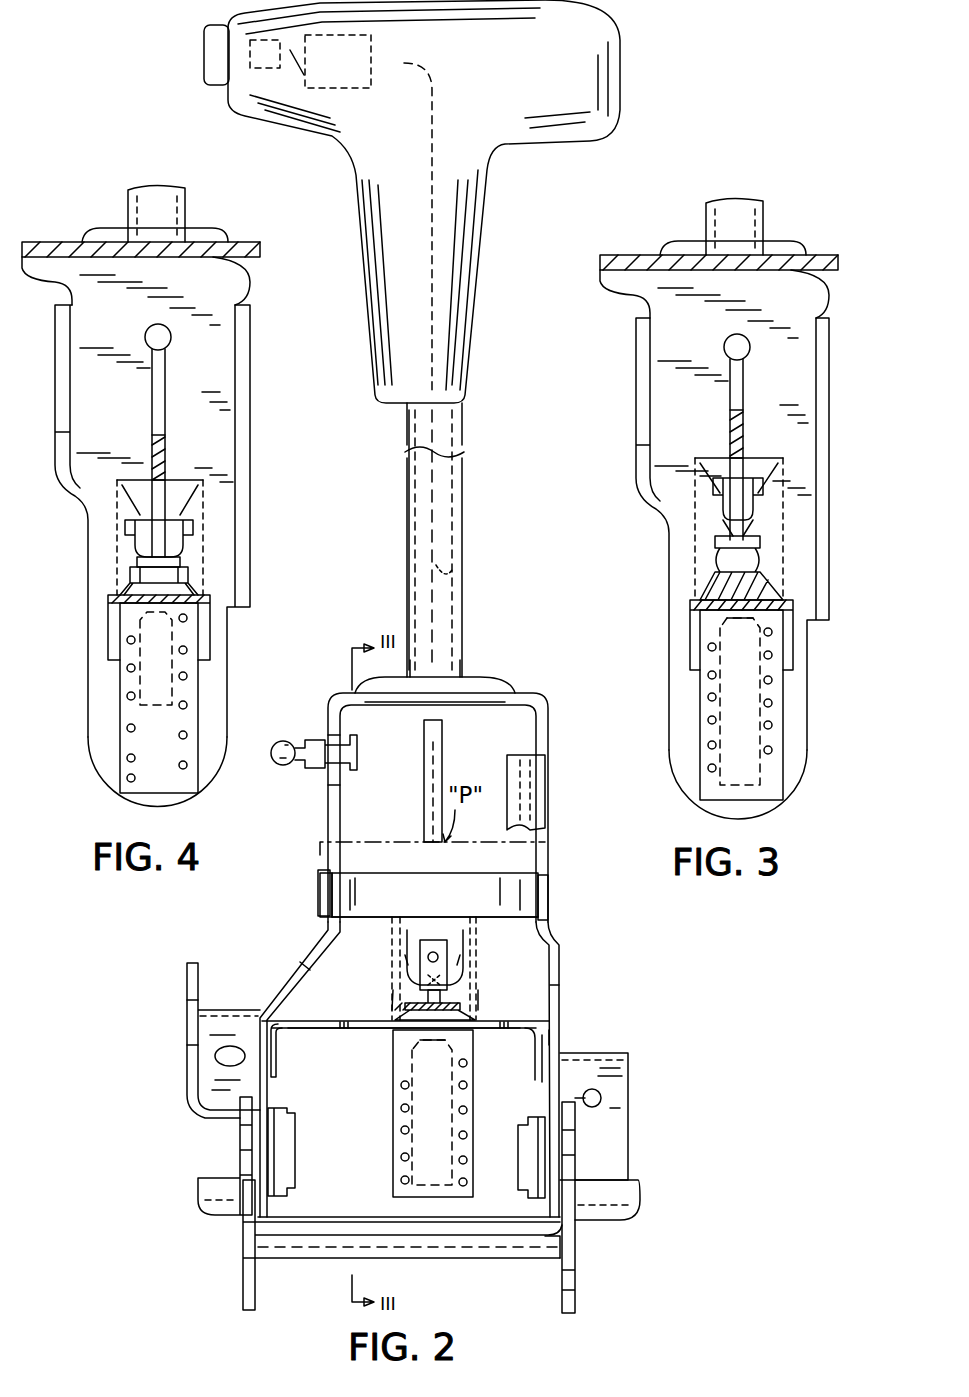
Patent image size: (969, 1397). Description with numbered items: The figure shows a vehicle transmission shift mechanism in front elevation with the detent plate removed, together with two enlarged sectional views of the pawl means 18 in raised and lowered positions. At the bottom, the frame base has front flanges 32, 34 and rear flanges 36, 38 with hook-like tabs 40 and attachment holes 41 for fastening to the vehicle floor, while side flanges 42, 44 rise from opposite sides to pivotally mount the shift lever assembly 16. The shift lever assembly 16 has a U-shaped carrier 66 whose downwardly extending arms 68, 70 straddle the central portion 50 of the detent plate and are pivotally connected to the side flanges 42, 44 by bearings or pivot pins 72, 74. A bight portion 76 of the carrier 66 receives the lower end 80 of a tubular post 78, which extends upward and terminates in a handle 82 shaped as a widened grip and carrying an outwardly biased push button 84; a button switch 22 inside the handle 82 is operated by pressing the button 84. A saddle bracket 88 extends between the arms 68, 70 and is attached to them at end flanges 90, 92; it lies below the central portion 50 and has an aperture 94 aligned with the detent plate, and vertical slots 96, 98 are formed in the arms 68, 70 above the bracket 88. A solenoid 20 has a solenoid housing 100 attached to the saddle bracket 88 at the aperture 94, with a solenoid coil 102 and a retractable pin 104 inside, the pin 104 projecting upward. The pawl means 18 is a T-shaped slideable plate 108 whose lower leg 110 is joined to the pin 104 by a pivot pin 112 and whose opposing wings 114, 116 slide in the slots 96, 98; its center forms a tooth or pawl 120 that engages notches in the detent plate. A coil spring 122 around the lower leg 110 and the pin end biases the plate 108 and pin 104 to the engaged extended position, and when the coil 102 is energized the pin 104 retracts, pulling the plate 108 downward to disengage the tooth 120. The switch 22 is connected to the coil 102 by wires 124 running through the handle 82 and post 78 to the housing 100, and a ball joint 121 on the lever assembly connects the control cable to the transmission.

In FIG. 2, the shift lever assembly 16 is at (465, 470).
In FIG. 2, the latch assembly 18 is at (570, 888).
In FIG. 2, the solenoid 20 is at (525, 1062).
In FIG. 2, the button switch 22 is at (322, 118).
In FIG. 2, the front flange 32 is at (188, 1005).
In FIG. 2, the front flange 34 is at (630, 1060).
In FIG. 2, the rear flange 36 is at (256, 1300).
In FIG. 2, the rear flange 38 is at (576, 1296).
In FIG. 2, the hook-like tab 40 is at (562, 1296).
In FIG. 2, the attachment hole 41 is at (216, 1060).
In FIG. 2, the side flange 42 is at (240, 1122).
In FIG. 2, the side flange 44 is at (580, 1135).
In FIG. 2, the central portion 50 is at (450, 740).
In FIG. 2, the U-shaped carrier 66 is at (555, 702).
In FIG. 2, the arm 68 is at (308, 968).
In FIG. 2, the arm 70 is at (556, 945).
In FIG. 4, the arm 70 is at (228, 323).
In FIG. 3, the arm 70 is at (810, 312).
In FIG. 2, the bearing/pivot pin 72 is at (290, 1142).
In FIG. 2, the bearing/pivot pin 74 is at (518, 1144).
In FIG. 2, the bight portion 76 is at (398, 705).
In FIG. 4, the bight portion 76 is at (238, 292).
In FIG. 3, the bight portion 76 is at (818, 282).
In FIG. 2, the tubular post 78 is at (464, 514).
In FIG. 2, the lower end 80 is at (462, 675).
In FIG. 4, the lower end 80 is at (186, 216).
In FIG. 3, the lower end 80 is at (764, 228).
In FIG. 2, the handle 82 is at (476, 119).
In FIG. 2, the push button 84 is at (222, 86).
In FIG. 2, the saddle bracket 88 is at (530, 1030).
In FIG. 4, the saddle bracket 88 is at (112, 618).
In FIG. 3, the saddle bracket 88 is at (765, 618).
In FIG. 2, the end flange 90 is at (278, 1060).
In FIG. 2, the end flange 92 is at (535, 1068).
In FIG. 2, the aperture 94 is at (405, 1035).
In FIG. 2, the slot 96 is at (320, 892).
In FIG. 4, the slot 96 is at (160, 410).
In FIG. 3, the slot 96 is at (740, 398).
In FIG. 2, the slot 98 is at (552, 896).
In FIG. 2, the solenoid housing 100 is at (464, 1130).
In FIG. 3, the solenoid housing 100 is at (785, 705).
In FIG. 2, the solenoid coil 102 is at (396, 1140).
In FIG. 4, the solenoid coil 102 is at (212, 680).
In FIG. 3, the solenoid coil 102 is at (800, 738).
In FIG. 2, the solenoid retractable pin 104 is at (472, 1042).
In FIG. 4, the solenoid retractable pin 104 is at (200, 640).
In FIG. 3, the solenoid retractable pin 104 is at (760, 556).
In FIG. 2, the slideable plate 108 is at (510, 876).
In FIG. 2, the lower leg 110 is at (458, 975).
In FIG. 2, the pivot pin 112 is at (440, 957).
In FIG. 4, the pivot pin 112 is at (186, 528).
In FIG. 3, the pivot pin 112 is at (760, 505).
In FIG. 2, the wing 114 is at (382, 903).
In FIG. 2, the wing 116 is at (528, 903).
In FIG. 2, the tooth or pawl 120 is at (434, 953).
In FIG. 4, the tooth or pawl 120 is at (166, 468).
In FIG. 3, the tooth or pawl 120 is at (745, 455).
In FIG. 2, the ball joint 121 is at (278, 748).
In FIG. 2, the coil spring 122 is at (396, 988).
In FIG. 4, the coil spring 122 is at (205, 580).
In FIG. 2, the wires 124 is at (450, 572).